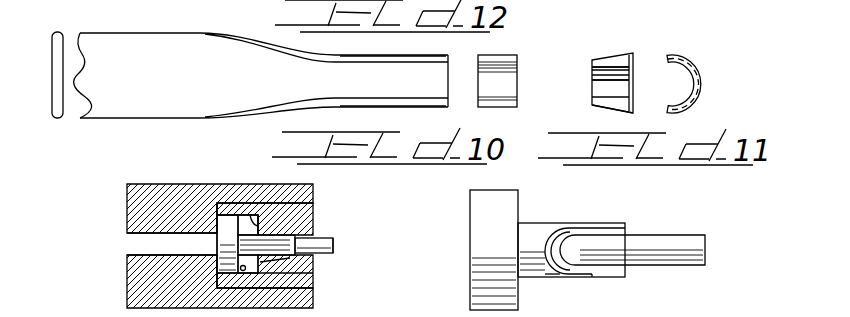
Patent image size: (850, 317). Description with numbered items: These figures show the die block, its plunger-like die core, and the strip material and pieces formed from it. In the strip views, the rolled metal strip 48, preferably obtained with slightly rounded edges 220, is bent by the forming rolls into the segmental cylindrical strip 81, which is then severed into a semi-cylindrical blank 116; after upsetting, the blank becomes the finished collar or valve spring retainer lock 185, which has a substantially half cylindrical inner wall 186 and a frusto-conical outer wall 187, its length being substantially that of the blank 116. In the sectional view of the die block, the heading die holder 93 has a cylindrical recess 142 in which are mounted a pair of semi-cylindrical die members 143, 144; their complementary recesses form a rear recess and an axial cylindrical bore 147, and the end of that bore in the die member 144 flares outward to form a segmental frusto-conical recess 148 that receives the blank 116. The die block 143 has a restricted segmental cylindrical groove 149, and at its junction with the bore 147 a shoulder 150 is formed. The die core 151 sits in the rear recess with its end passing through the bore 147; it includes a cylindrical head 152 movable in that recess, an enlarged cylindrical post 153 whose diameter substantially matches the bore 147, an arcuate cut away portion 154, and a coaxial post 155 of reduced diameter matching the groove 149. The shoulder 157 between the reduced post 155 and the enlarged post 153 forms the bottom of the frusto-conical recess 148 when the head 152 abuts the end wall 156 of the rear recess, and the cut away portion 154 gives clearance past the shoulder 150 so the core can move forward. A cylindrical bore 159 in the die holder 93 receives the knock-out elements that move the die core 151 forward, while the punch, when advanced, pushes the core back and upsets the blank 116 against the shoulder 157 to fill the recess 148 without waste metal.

In FIG. 12, the metal strip 48 is at (60, 53).
In FIG. 12, the slightly rounded edges 220 is at (57, 120).
In FIG. 12, the segmental cylindrical strip 81 is at (382, 73).
In FIG. 12, the severed blank 116 is at (540, 48).
In FIG. 12, the valve spring retainer lock 185 is at (623, 43).
In FIG. 12, the half cylindrical inner wall 186 is at (632, 75).
In FIG. 12, the frusto-conical outer wall 187 is at (622, 112).
In FIG. 10, the heading die holder 93 is at (133, 205).
In FIG. 10, the cylindrical bore 159 is at (140, 240).
In FIG. 10, the cylindrical head 152 is at (221, 260).
In FIG. 11, the cylindrical head 152 is at (490, 257).
In FIG. 10, the die core 151 is at (226, 213).
In FIG. 11, the die core 151 is at (572, 225).
In FIG. 10, the end wall 156 is at (249, 216).
In FIG. 10, the cylindrical bore 147 is at (272, 232).
In FIG. 10, the cylindrical recess 142 is at (312, 208).
In FIG. 10, the semi-cylindrical die member 144 is at (312, 222).
In FIG. 10, the segmental frusto-conical recess 148 is at (314, 233).
In FIG. 10, the segmental cylindrical groove 149 is at (320, 253).
In FIG. 10, the coaxial post of reduced diameter 155 is at (340, 247).
In FIG. 11, the coaxial post of reduced diameter 155 is at (668, 245).
In FIG. 10, the semi-cylindrical die block 143 is at (308, 272).
In FIG. 10, the shoulder 150 is at (282, 262).
In FIG. 11, the shoulder 157 is at (645, 215).
In FIG. 11, the enlarged cylindrical post 153 is at (537, 268).
In FIG. 11, the arcuate cut away portion 154 is at (577, 275).